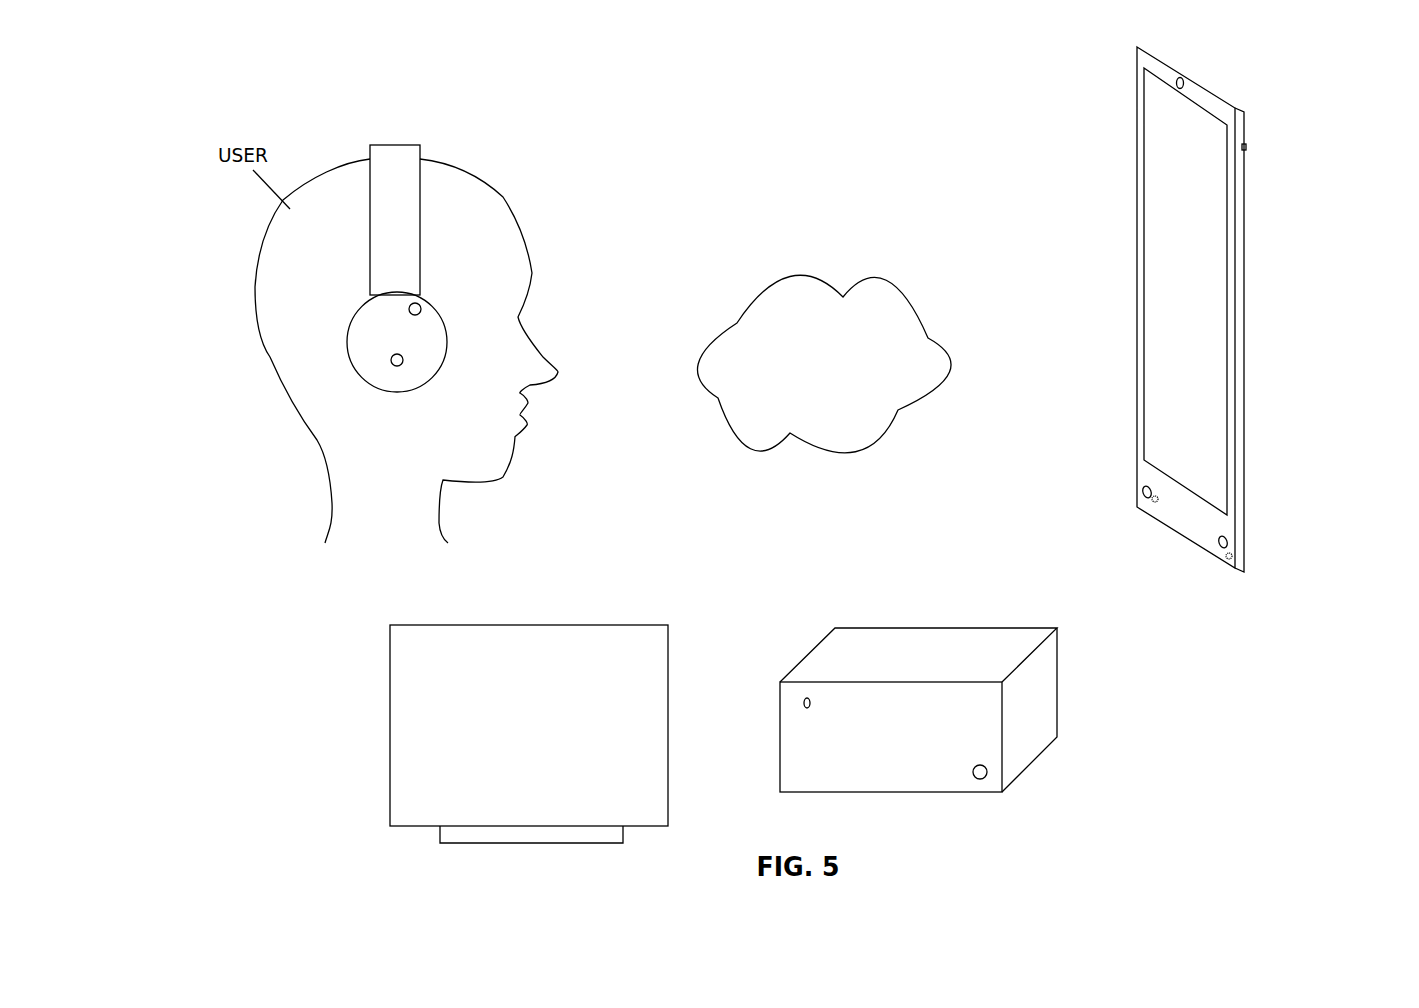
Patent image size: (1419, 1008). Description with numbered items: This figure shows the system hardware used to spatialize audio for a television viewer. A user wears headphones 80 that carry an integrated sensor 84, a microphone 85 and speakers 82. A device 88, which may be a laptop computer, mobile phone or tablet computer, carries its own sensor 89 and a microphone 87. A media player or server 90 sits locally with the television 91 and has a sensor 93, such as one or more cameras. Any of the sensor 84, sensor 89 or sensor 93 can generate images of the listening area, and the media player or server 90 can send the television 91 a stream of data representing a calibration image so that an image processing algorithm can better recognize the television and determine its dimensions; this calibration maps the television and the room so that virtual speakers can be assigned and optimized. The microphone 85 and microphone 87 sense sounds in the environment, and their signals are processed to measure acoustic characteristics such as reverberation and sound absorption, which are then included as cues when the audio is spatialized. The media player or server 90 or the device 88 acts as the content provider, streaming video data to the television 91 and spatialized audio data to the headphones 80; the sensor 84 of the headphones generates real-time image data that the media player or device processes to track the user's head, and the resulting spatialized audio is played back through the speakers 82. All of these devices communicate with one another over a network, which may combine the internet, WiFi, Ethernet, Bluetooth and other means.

The headphones 80 is at (403, 145).
The speakers 82 is at (347, 348).
The sensor 84 is at (420, 304).
The microphone 85 is at (392, 365).
The microphone 87 is at (1142, 492).
The device 88 is at (1250, 287).
The sensor 89 is at (1176, 83).
The media player or server 90 is at (918, 710).
The television 91 is at (529, 734).
The sensor 93 is at (809, 698).